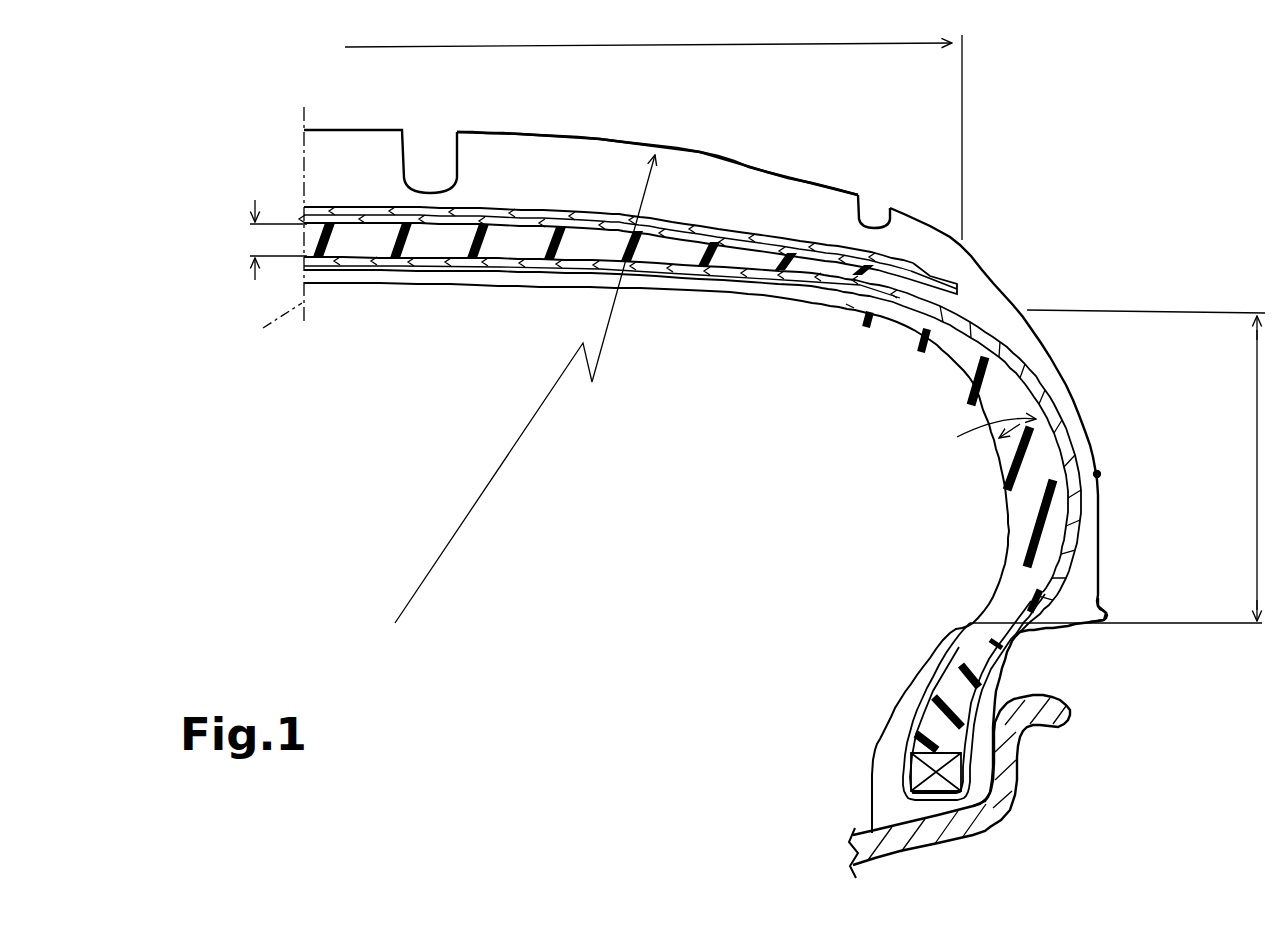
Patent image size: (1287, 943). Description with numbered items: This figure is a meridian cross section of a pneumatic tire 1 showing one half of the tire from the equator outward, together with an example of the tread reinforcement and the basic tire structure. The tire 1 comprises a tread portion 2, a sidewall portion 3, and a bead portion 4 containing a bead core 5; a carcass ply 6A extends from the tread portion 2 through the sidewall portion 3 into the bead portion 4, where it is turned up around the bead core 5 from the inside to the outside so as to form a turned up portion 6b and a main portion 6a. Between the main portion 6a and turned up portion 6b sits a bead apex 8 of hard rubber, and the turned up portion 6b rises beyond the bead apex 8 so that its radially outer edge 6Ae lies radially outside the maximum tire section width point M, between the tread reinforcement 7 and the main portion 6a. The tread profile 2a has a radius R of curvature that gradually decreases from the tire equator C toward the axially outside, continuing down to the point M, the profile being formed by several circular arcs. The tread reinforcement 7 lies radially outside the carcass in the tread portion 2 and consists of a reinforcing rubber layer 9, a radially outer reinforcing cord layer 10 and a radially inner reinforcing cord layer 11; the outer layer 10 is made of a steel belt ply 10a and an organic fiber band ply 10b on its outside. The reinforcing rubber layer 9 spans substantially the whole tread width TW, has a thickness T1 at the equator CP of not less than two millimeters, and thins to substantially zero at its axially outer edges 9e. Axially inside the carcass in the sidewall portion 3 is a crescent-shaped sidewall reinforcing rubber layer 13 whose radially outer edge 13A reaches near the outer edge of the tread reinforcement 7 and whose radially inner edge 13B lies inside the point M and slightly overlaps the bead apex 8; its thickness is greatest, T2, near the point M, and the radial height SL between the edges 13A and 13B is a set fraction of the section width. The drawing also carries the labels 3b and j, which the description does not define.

The pneumatic tire 1 is at (1002, 260).
The tread portion 2 is at (698, 146).
The tread profile 2a is at (764, 170).
The sidewall portion 3 is at (1107, 428).
The sidewall lower end portion 3b is at (1097, 611).
The bead portion 4 is at (853, 752).
The bead core 5 is at (913, 782).
The carcass ply 6A is at (884, 512).
The carcass ply main portion 6a is at (1060, 548).
The carcass ply turned up portion 6b is at (980, 623).
The radially outer edge of turned up portion 6Ae is at (850, 306).
The tread reinforcement 7 is at (346, 203).
The bead apex 8 is at (932, 722).
The reinforcing rubber layer 9 is at (375, 248).
The axially outer edge of reinforcing rubber layer 9e is at (842, 246).
The outer reinforcing cord layer 10 is at (527, 361).
The belt ply 10a is at (457, 224).
The band ply 10b is at (517, 213).
The inner reinforcing cord layer 11 is at (682, 268).
The sidewall reinforcing rubber layer 13 is at (952, 368).
The radially outer edge of sidewall reinforcing rubber layer 13A is at (810, 304).
The radially inner edge of sidewall reinforcing rubber layer 13B is at (969, 618).
The rim j is at (1022, 782).
The tire equator C is at (303, 201).
The tire equator CP is at (264, 334).
The tread width TW is at (630, 137).
The thickness of reinforcing rubber layer T1 is at (263, 240).
The maximum thickness of sidewall reinforcing rubber layer T2 is at (978, 440).
The radial height SL is at (1117, 466).
The maximum tire section width point M is at (1100, 474).
The radius of curvature R is at (525, 389).